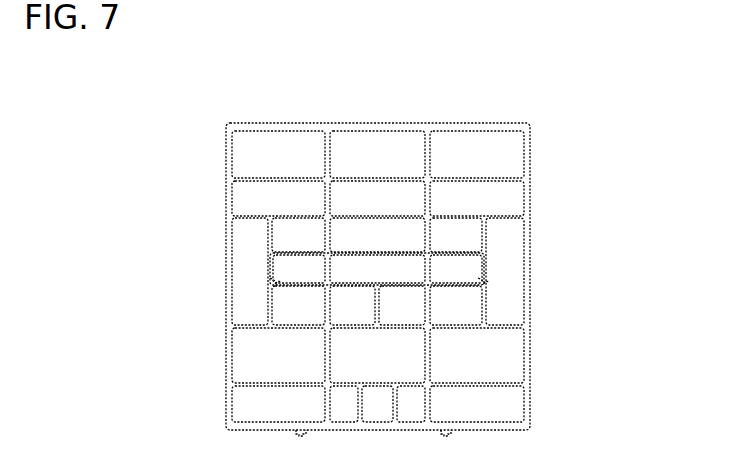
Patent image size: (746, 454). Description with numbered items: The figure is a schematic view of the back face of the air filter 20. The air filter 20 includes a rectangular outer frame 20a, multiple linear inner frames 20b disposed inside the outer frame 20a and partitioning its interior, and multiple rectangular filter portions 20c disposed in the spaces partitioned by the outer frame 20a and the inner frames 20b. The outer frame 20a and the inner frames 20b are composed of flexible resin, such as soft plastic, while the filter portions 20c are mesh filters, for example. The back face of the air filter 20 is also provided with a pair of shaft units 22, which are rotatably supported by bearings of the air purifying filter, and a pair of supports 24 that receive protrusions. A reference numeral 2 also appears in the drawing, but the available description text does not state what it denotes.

The electronic component 2 is at (305, 175).
The air filter 20 is at (560, 138).
The outer frame 20a is at (530, 189).
The inner frames 20b is at (497, 324).
The filter portions 20c is at (483, 361).
The shaft units 22 is at (272, 258).
The supports 24 is at (276, 284).